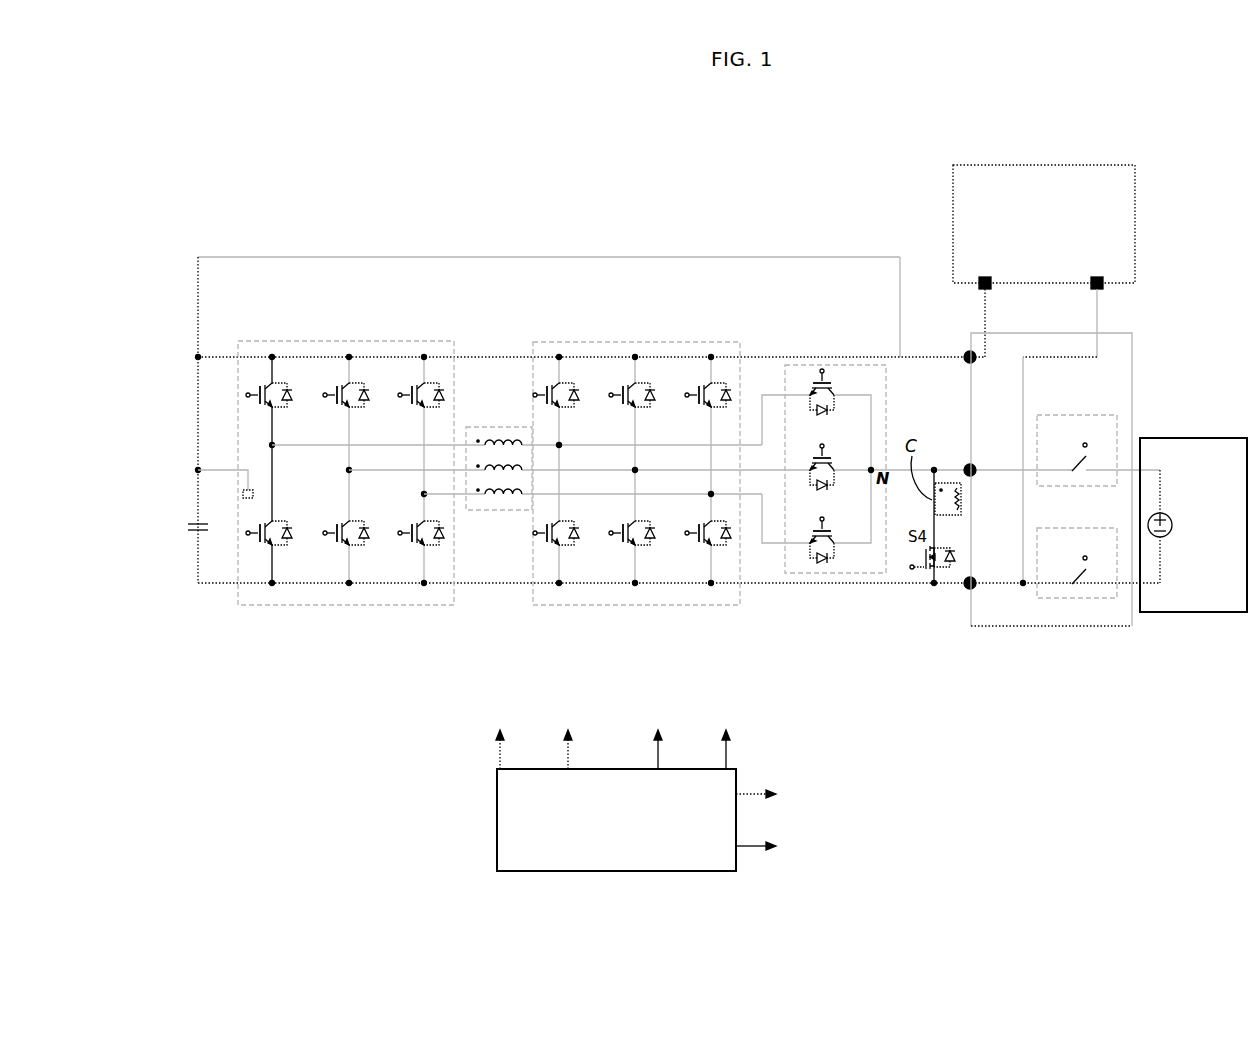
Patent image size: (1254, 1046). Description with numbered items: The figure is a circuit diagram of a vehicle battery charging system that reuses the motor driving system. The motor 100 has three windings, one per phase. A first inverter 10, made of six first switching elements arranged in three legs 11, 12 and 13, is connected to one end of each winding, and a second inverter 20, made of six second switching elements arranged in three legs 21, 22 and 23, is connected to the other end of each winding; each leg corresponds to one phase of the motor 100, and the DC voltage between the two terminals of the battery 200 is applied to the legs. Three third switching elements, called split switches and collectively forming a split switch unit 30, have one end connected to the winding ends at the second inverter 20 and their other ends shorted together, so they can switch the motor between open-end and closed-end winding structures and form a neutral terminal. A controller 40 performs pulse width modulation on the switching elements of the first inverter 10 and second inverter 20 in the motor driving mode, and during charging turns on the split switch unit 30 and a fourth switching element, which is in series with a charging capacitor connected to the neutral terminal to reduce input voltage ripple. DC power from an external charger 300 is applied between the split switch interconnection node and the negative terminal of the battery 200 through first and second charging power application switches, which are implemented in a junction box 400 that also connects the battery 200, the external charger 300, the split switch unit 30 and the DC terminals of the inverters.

The first inverter 10 is at (349, 475).
The leg of the first inverter 11 is at (273, 348).
The leg of the first inverter 12 is at (350, 348).
The leg of the first inverter 13 is at (425, 348).
The second inverter 20 is at (640, 475).
The leg of the second inverter 21 is at (560, 348).
The leg of the second inverter 22 is at (636, 348).
The leg of the second inverter 23 is at (712, 348).
The split switch unit 30 is at (863, 574).
The controller 40 is at (496, 819).
The motor 100 is at (493, 511).
The battery 200 is at (1135, 223).
The external charger 300 is at (1205, 613).
The junction box 400 is at (1108, 627).